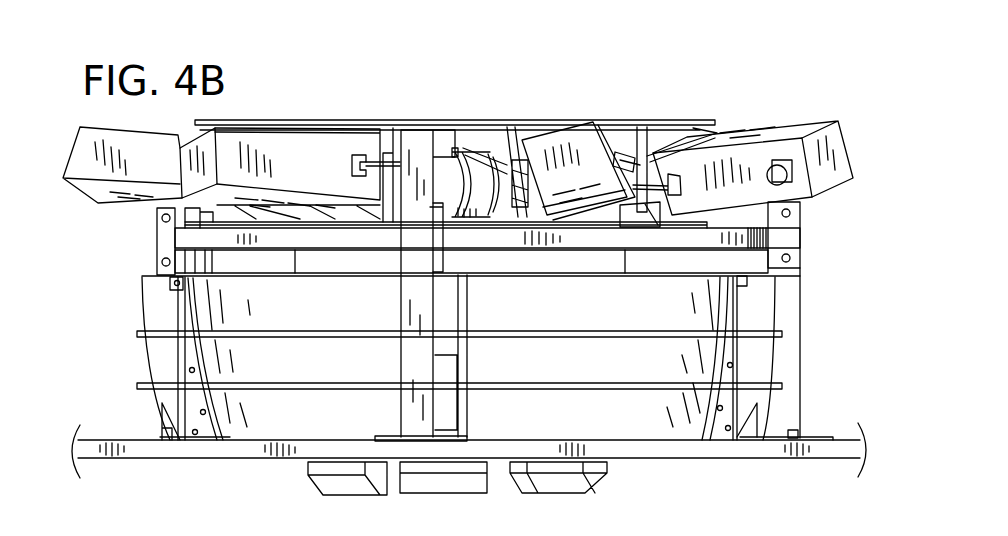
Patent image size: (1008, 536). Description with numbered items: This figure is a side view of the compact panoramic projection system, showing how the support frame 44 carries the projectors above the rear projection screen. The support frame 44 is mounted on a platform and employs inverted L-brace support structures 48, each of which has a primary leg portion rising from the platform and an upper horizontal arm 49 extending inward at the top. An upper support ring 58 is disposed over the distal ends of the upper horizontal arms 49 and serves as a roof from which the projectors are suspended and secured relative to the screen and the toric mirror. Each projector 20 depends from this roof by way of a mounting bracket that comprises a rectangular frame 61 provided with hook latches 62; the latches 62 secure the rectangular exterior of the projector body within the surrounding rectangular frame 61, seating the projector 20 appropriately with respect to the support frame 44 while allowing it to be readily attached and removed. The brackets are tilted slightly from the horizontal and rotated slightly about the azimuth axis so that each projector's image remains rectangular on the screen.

The projector 20 is at (298, 153).
The hook latches 62 is at (381, 165).
The rectangular frame 61 is at (627, 150).
The upper support ring 58 is at (682, 120).
The upper horizontal arms 49 is at (727, 128).
The support frame 44 is at (809, 257).
The inverted L-brace support structures 48 is at (418, 304).